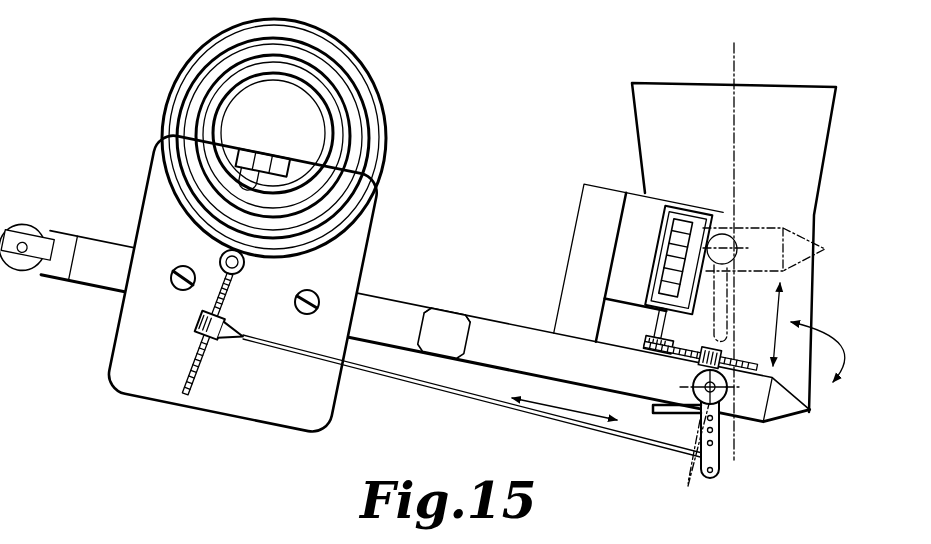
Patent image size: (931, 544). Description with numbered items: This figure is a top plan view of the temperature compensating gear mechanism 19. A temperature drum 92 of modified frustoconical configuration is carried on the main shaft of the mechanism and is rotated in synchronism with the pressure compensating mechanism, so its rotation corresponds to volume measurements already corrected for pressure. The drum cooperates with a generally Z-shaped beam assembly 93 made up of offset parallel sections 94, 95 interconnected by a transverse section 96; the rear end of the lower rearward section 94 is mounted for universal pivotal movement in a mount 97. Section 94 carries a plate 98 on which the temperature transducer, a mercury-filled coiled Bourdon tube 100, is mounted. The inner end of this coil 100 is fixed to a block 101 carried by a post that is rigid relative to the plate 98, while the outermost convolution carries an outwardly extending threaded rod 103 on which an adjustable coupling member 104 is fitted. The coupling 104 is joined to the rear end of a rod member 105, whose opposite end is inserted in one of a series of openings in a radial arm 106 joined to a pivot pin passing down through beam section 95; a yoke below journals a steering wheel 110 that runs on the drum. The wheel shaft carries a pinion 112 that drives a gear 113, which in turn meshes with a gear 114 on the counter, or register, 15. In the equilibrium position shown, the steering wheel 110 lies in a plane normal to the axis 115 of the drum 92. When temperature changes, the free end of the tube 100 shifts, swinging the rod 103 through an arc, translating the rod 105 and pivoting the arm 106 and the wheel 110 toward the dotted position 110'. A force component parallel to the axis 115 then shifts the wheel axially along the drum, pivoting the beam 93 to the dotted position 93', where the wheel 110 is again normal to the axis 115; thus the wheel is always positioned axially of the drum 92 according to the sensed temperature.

The counter or register 15 is at (634, 229).
The temperature compensating gear mechanism 19 is at (236, 464).
The temperature drum 92 is at (798, 84).
The beam assembly 93 is at (444, 313).
The dotted position of beam 93' is at (786, 271).
The lower rearward beam section 94 is at (96, 296).
The beam section 95 is at (522, 338).
The transverse section 96 is at (449, 322).
The mount 97 is at (40, 222).
The plate 98 is at (290, 416).
The coiled Bourdon tube 100 is at (384, 108).
The block 101 is at (266, 154).
The threaded rod 103 is at (194, 381).
The adjustable coupling member 104 is at (220, 346).
The rod member 105 is at (447, 394).
The radial arm 106 is at (720, 470).
The steering wheel 110 is at (684, 387).
The dotted line position of steering wheel 110' is at (679, 371).
The pinion 112 is at (722, 347).
The gear 113 is at (809, 332).
The gear 114 is at (648, 343).
The axis of drum 115 is at (738, 158).